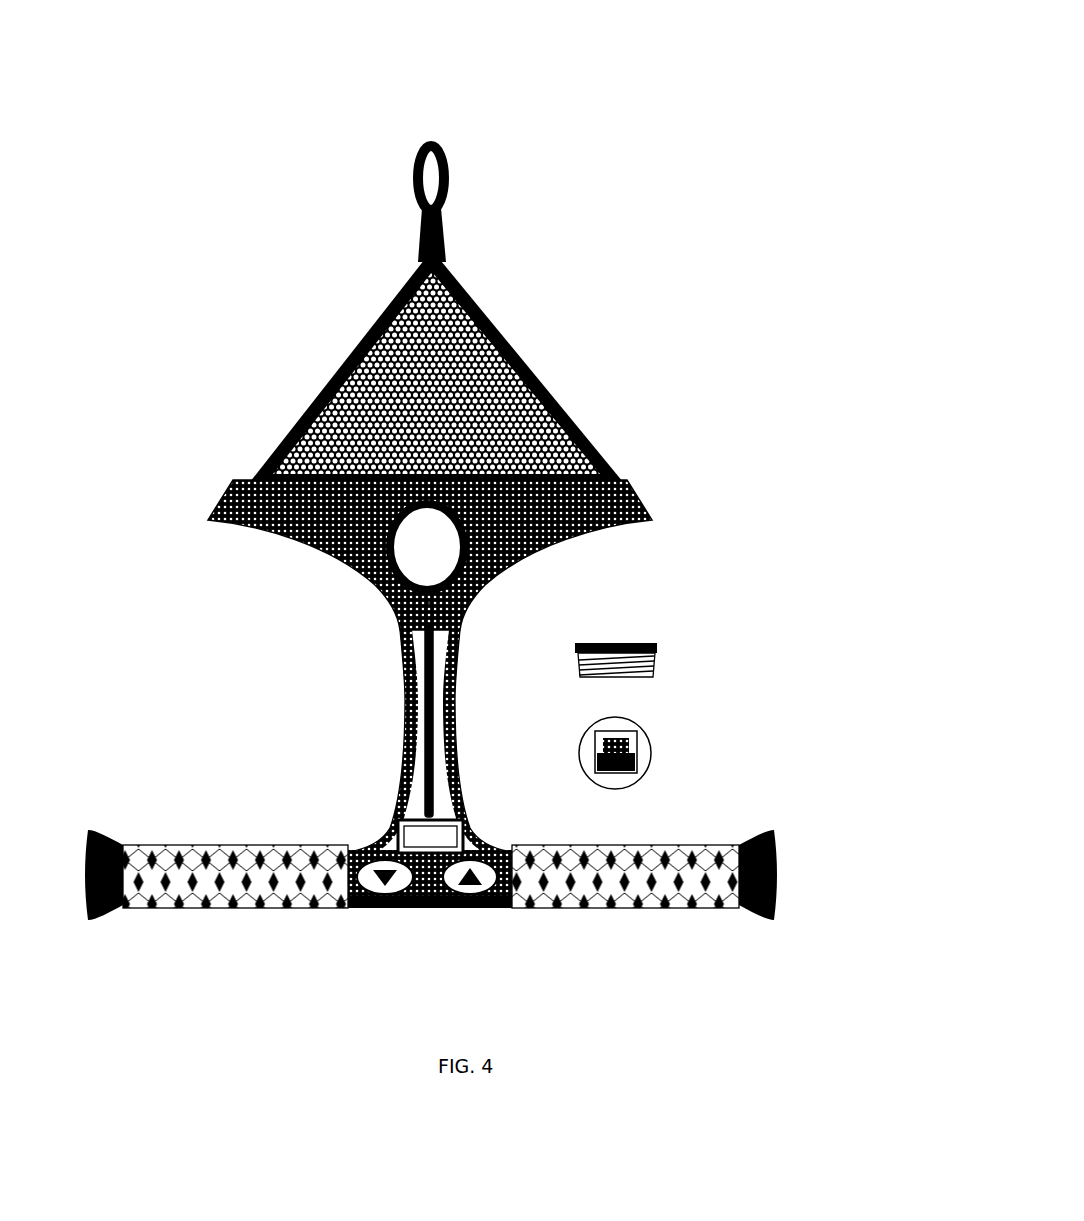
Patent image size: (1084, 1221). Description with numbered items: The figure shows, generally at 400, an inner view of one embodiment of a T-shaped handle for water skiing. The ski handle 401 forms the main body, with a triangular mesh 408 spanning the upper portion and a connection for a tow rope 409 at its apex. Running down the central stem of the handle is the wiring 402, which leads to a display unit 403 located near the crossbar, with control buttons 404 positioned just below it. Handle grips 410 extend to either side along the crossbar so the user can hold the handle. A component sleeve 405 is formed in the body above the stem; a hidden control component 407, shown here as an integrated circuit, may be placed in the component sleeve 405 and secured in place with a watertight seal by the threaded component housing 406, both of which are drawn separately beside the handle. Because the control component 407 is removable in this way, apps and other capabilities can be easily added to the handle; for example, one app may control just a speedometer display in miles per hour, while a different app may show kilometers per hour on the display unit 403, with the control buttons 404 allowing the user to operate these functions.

The T-shaped handle 400 is at (781, 45).
The ski handle 401 is at (248, 502).
The wiring 402 is at (418, 688).
The display unit 403 is at (397, 828).
The control buttons 404 is at (397, 842).
The component sleeve 405 is at (432, 537).
The threaded component housing 406 is at (665, 657).
The hidden control component 407 is at (658, 758).
The mesh 408 is at (458, 403).
The connection for a tow rope 409 is at (455, 184).
The handle grips 410 is at (590, 913).